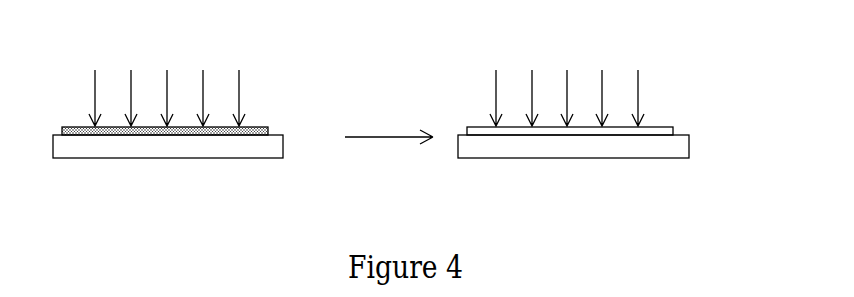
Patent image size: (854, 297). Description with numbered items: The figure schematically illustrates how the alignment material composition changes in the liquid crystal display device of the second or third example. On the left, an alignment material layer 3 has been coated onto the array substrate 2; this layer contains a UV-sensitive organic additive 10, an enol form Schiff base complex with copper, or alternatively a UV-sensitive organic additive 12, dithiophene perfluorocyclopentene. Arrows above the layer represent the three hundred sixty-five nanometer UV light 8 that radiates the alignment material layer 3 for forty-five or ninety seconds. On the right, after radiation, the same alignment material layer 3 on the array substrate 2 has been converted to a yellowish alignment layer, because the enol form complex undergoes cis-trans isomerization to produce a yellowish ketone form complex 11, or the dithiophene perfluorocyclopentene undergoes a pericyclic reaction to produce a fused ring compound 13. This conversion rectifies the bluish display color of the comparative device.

The array substrate 2 is at (239, 147).
The alignment material layer 3 is at (411, 94).
The UV light 8 is at (240, 82).
The UV-sensitive organic additive 10 is at (206, 114).
The UV-sensitive organic additive 12 is at (260, 131).
The ketone form complex 11 is at (613, 109).
The fused ring compound 13 is at (665, 130).